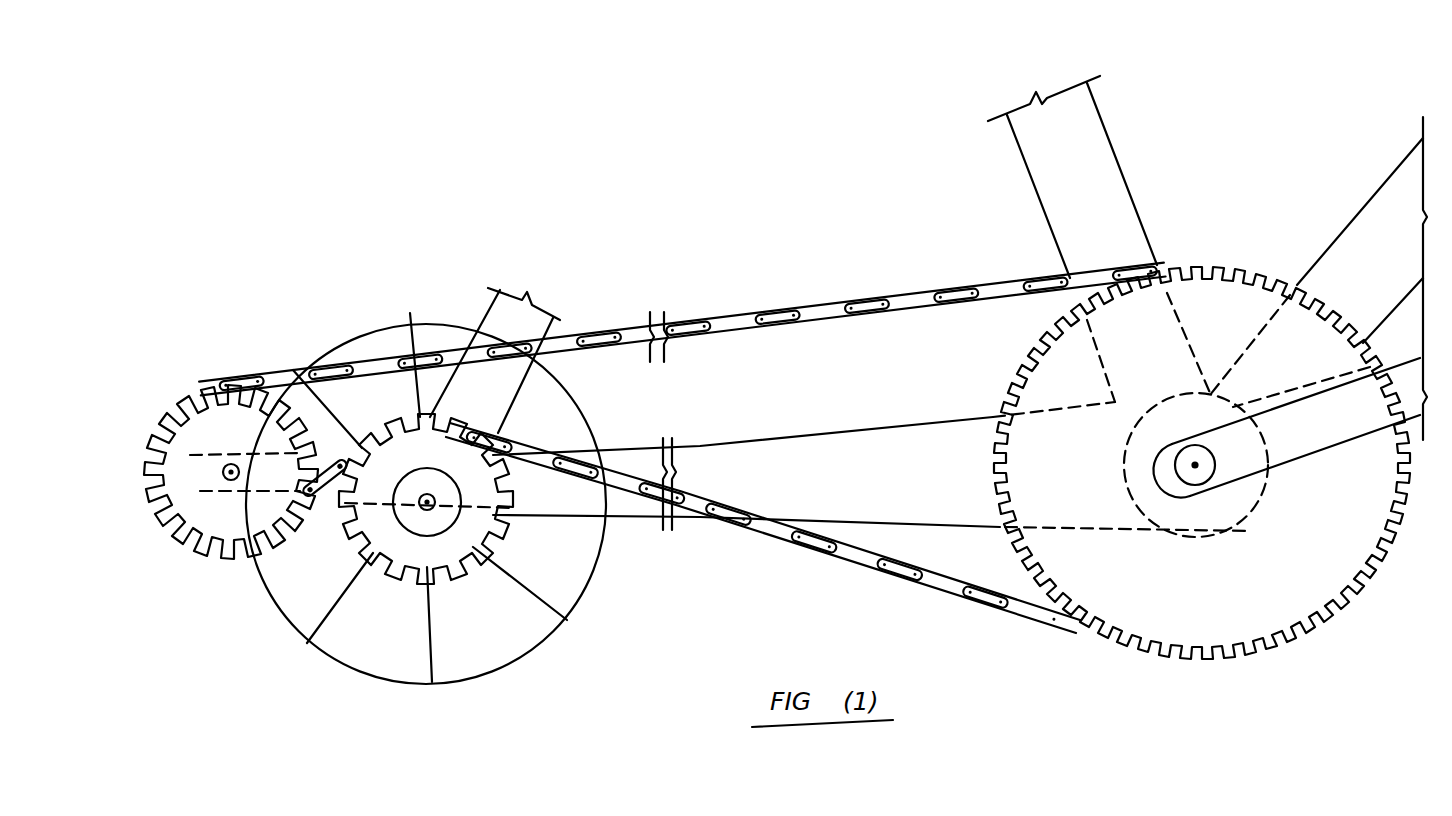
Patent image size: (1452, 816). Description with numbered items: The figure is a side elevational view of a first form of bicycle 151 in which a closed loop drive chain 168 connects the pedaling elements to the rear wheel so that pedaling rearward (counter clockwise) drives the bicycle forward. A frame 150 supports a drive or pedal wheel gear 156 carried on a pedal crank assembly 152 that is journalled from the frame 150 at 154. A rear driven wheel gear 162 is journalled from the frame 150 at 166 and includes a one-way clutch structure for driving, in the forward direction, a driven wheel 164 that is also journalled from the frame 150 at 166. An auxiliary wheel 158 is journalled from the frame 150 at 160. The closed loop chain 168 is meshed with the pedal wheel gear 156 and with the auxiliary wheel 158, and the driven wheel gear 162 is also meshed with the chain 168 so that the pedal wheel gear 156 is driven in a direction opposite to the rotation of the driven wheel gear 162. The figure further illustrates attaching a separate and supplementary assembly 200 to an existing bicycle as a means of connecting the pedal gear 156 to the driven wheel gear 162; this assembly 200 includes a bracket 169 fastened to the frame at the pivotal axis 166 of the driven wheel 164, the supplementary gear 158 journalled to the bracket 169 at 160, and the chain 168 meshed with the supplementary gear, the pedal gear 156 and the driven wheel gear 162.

The bicycle frame 150 is at (1122, 128).
The bicycle 151 is at (1313, 250).
The pedal crank assembly 152 is at (1271, 400).
The pedal crank journal 154 is at (1203, 470).
The drive or pedal wheel gear 156 is at (1010, 467).
The auxiliary wheel 158 is at (200, 553).
The auxiliary wheel journal 160 is at (233, 460).
The rear driven wheel gear 162 is at (472, 580).
The driven wheel 164 is at (550, 592).
The driven wheel pivotal axis 166 is at (418, 510).
The closed loop drive chain 168 is at (876, 296).
The bracket 169 is at (331, 455).
The supplementary assembly 200 is at (302, 533).